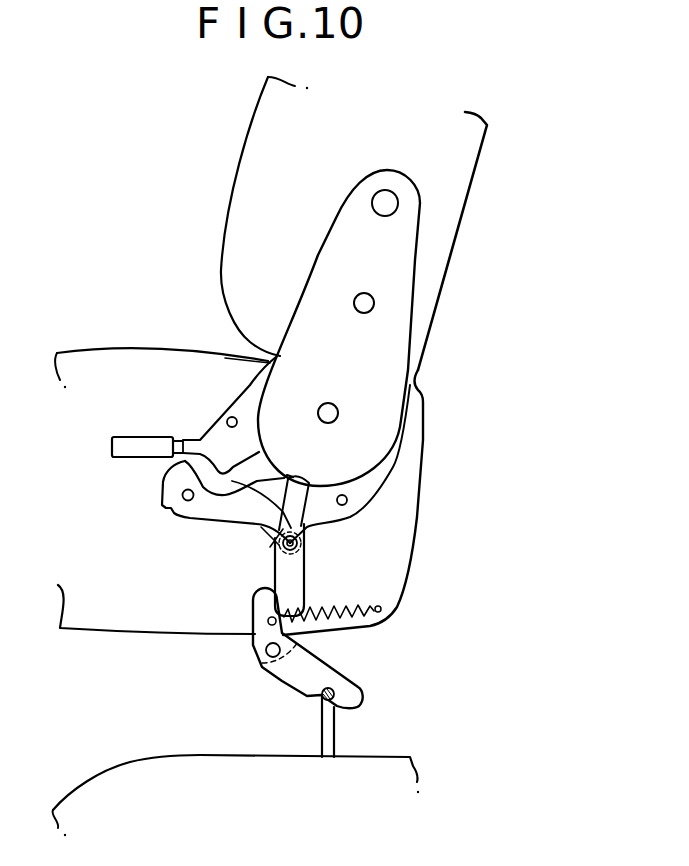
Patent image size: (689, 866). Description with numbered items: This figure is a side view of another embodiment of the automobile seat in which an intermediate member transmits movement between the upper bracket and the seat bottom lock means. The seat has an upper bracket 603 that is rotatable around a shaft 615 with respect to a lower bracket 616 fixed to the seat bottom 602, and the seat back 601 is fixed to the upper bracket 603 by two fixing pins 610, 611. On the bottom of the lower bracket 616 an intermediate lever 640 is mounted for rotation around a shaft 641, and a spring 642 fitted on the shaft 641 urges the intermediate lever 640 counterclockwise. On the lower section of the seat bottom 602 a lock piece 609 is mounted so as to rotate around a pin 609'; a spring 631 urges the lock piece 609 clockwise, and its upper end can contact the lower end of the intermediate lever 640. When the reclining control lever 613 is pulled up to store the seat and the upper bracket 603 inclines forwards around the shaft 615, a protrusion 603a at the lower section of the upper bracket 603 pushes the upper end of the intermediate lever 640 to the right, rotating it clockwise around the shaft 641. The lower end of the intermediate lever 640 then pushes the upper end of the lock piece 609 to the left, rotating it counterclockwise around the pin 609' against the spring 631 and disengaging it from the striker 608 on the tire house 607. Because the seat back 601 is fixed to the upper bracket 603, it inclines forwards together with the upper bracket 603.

The seat back 601 is at (475, 188).
The seat bottom 602 is at (137, 346).
The upper bracket 603 is at (413, 334).
The protrusion 603a is at (253, 522).
The tire house 607 is at (165, 753).
The striker 608 is at (340, 732).
The lock piece 609 is at (332, 648).
The pin 609' is at (237, 659).
The fixing pin 610 is at (385, 203).
The fixing pin 611 is at (364, 303).
The reclining control lever 613 is at (142, 437).
The shaft 615 is at (328, 413).
The lower bracket 616 is at (208, 420).
The spring 631 is at (338, 612).
The intermediate lever 640 is at (283, 572).
The shaft 641 is at (302, 545).
The spring 642 is at (271, 541).